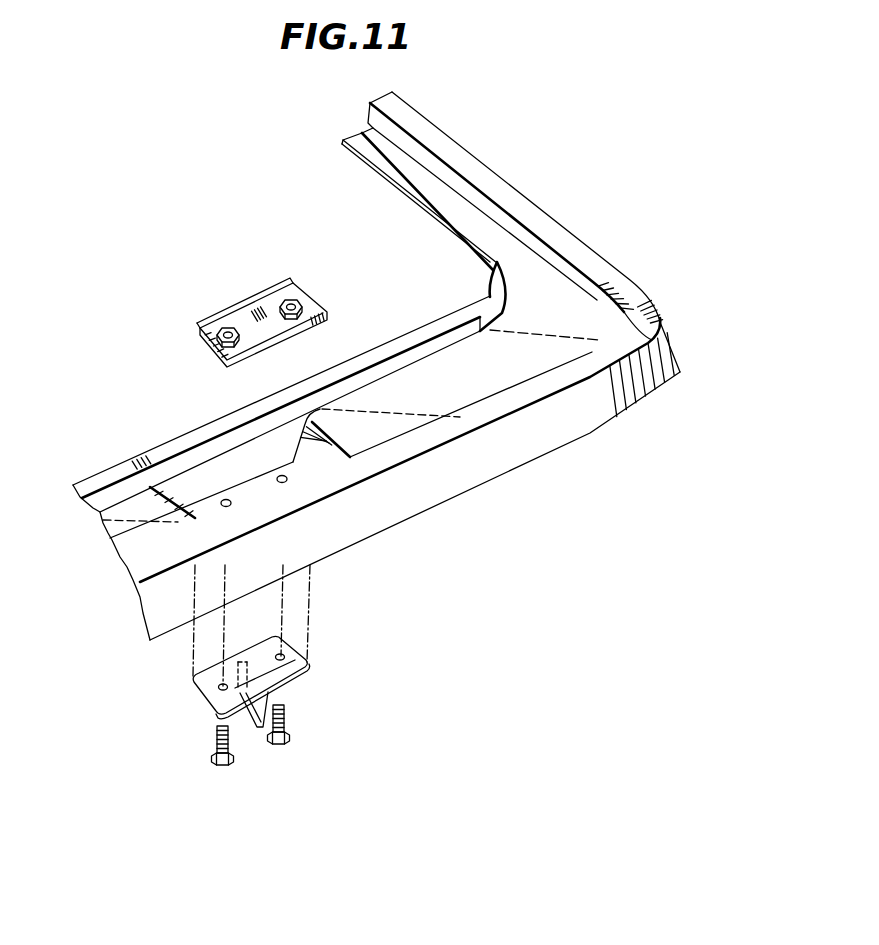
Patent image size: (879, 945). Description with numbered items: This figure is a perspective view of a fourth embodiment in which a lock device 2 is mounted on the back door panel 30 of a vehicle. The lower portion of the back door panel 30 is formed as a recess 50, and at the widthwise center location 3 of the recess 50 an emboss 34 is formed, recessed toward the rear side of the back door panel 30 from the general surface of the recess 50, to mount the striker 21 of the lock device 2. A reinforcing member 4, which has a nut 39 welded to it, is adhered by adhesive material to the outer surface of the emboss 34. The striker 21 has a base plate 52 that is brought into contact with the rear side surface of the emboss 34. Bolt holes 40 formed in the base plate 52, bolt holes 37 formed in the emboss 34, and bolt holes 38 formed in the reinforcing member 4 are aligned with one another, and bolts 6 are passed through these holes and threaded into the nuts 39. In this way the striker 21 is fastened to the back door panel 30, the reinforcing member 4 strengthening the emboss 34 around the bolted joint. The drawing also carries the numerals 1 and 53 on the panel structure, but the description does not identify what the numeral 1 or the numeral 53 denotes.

The frame rail (upper leg) 1 is at (571, 219).
The lock device 2 is at (295, 684).
The widthwise center location 3 is at (202, 493).
The reinforcing member 4 is at (308, 303).
The bolts 6 is at (212, 755).
The striker 21 is at (258, 728).
The back door panel 30 is at (540, 390).
The emboss 34 is at (242, 492).
The bolt holes 37 is at (221, 505).
The bolt holes 38 is at (226, 328).
The nut 39 is at (200, 322).
The bolt holes 40 is at (278, 655).
The recess 50 is at (617, 370).
The base plate 52 is at (300, 660).
The top flange 53 is at (360, 360).